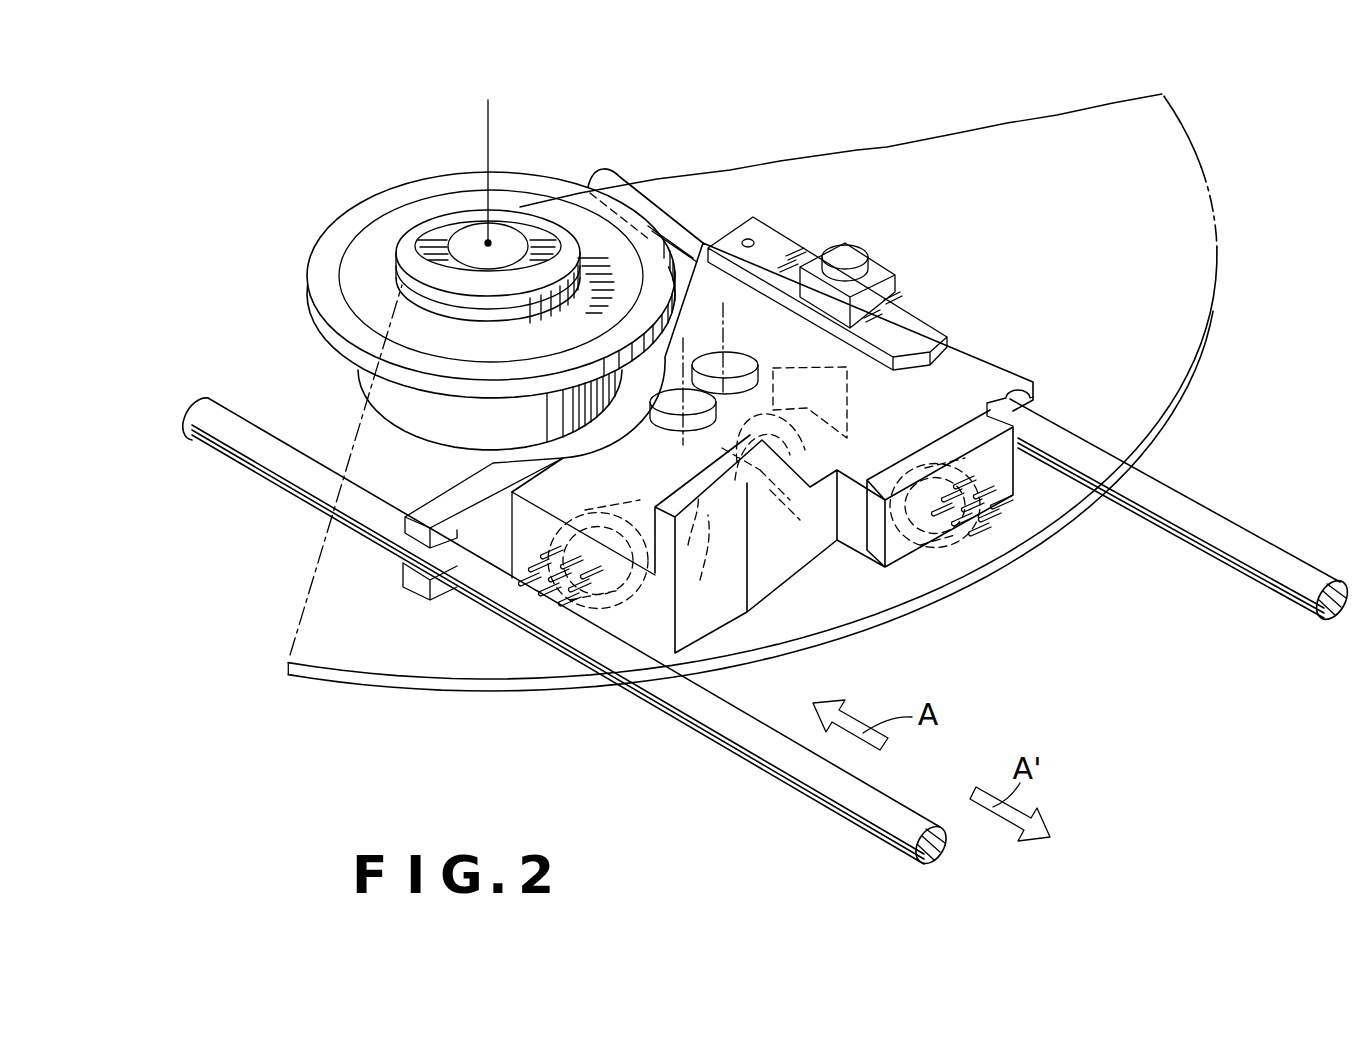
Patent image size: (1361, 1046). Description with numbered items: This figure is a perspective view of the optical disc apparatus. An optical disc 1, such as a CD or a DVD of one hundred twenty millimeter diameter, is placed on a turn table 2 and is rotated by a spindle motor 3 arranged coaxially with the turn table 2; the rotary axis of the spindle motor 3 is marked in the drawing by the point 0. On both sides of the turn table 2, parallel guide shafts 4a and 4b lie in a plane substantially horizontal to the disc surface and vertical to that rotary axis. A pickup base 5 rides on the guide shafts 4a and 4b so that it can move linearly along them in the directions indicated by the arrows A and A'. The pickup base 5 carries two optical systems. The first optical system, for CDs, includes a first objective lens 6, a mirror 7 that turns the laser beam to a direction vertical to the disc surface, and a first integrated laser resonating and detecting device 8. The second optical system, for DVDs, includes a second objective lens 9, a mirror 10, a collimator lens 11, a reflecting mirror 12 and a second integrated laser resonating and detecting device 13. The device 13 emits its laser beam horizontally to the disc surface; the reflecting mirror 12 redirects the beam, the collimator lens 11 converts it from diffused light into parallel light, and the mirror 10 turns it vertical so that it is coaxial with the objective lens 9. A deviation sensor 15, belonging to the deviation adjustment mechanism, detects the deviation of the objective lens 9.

The center of rotation 0 is at (486, 241).
The optical disc 1 is at (1205, 255).
The turn table 2 is at (347, 212).
The spindle motor 3 is at (408, 418).
The guide shaft 4a is at (1250, 572).
The guide shaft 4b is at (835, 795).
The pickup base 5 is at (960, 385).
The first objective lens 6 is at (663, 430).
The mirror 7 is at (698, 556).
The first integrated laser resonating and detecting device 8 is at (640, 600).
The second objective lens 9 is at (733, 357).
The mirror 10 is at (783, 585).
The collimator lens 11 is at (774, 480).
The reflecting mirror 12 is at (852, 395).
The second integrated laser resonating and detecting device 13 is at (918, 540).
The deviation sensor 15 is at (850, 252).